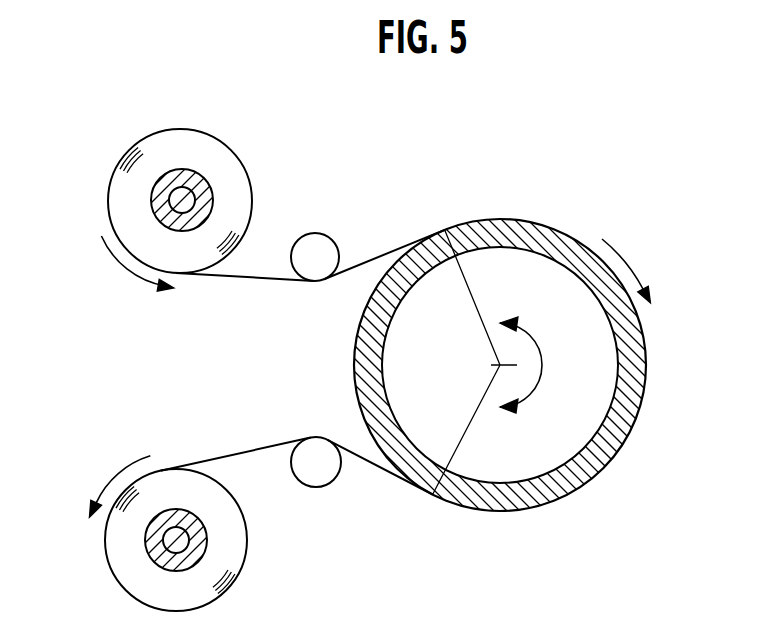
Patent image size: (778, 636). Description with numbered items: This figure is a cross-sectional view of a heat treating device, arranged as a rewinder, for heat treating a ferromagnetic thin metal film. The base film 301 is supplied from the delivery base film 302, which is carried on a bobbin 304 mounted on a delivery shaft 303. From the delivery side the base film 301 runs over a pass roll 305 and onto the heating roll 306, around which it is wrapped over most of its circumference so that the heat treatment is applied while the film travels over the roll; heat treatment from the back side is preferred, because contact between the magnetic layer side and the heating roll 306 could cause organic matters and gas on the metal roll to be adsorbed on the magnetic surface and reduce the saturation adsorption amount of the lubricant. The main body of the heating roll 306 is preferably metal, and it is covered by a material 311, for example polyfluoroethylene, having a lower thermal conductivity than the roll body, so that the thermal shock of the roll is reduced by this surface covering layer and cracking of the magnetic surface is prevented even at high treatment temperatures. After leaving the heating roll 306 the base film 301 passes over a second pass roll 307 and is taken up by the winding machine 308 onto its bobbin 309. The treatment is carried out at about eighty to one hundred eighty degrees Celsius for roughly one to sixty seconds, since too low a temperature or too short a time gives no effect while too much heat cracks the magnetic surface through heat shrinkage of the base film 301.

The base film 301 is at (265, 284).
The delivery base film 302 is at (118, 181).
The delivery shaft 303 is at (173, 190).
The bobbin 304 is at (209, 196).
The pass roll 305 is at (322, 250).
The heating roll 306 is at (540, 272).
The pass roll 307 is at (325, 470).
The winding machine 308 is at (165, 544).
The bobbin 309 is at (209, 542).
The covering material 311 is at (602, 464).